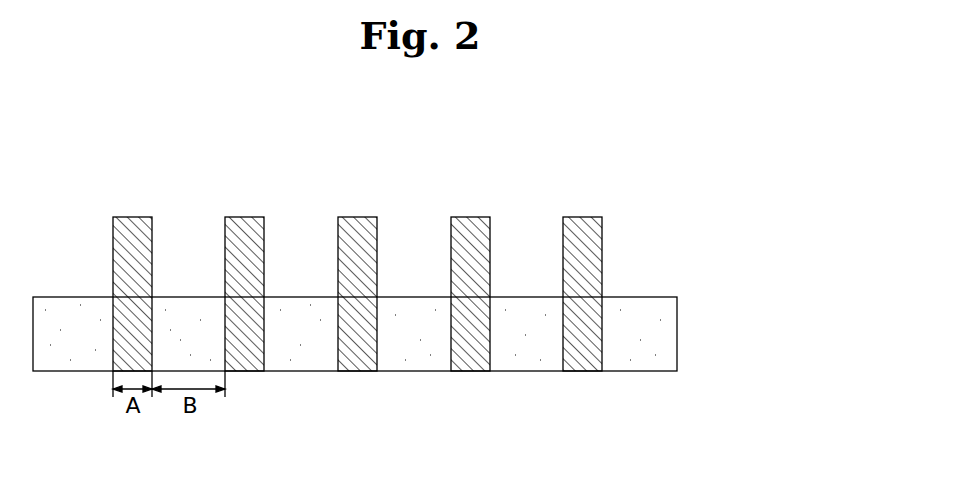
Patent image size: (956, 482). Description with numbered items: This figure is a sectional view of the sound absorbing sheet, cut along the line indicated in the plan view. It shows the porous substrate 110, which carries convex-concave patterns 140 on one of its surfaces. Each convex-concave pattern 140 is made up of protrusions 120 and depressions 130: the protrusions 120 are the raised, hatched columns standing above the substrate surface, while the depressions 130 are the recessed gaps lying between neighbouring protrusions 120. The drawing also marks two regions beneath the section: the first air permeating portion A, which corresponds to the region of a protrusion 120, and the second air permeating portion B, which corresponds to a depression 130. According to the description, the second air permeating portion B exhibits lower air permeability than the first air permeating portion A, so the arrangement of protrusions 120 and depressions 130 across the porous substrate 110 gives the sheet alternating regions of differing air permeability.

The porous substrate 110 is at (693, 313).
The protrusion 120 is at (135, 233).
The depression 130 is at (178, 248).
The convex-concave pattern 140 is at (207, 147).